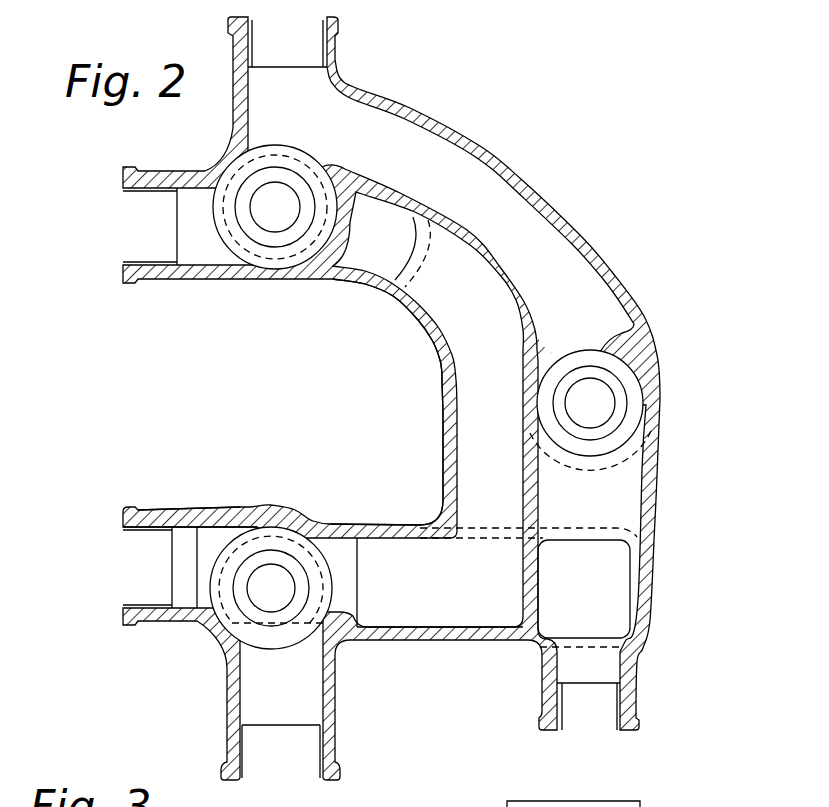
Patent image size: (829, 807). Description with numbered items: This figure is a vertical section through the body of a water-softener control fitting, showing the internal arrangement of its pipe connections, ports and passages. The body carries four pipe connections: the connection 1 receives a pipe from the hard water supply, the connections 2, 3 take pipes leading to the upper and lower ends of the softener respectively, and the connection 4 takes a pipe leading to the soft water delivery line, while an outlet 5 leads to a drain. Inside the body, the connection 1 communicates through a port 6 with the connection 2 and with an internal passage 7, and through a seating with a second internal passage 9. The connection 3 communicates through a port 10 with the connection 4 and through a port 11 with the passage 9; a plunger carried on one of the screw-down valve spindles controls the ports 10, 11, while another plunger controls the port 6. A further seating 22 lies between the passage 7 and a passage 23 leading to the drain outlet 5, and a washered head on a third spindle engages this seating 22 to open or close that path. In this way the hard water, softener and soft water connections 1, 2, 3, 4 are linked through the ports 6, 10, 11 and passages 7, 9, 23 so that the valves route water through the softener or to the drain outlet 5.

The connection 1 is at (135, 218).
The connection 2 is at (305, 38).
The connection 3 is at (150, 590).
The connection 4 is at (148, 548).
The outlet 5 is at (588, 713).
The port 6 is at (297, 137).
The internal passage 7 is at (518, 207).
The internal passage 9 is at (445, 395).
The port 10 is at (215, 530).
The port 11 is at (343, 577).
The seating 22 is at (622, 403).
The passage 23 is at (610, 503).